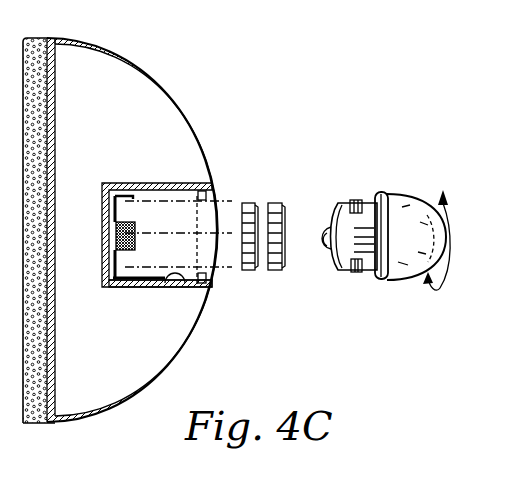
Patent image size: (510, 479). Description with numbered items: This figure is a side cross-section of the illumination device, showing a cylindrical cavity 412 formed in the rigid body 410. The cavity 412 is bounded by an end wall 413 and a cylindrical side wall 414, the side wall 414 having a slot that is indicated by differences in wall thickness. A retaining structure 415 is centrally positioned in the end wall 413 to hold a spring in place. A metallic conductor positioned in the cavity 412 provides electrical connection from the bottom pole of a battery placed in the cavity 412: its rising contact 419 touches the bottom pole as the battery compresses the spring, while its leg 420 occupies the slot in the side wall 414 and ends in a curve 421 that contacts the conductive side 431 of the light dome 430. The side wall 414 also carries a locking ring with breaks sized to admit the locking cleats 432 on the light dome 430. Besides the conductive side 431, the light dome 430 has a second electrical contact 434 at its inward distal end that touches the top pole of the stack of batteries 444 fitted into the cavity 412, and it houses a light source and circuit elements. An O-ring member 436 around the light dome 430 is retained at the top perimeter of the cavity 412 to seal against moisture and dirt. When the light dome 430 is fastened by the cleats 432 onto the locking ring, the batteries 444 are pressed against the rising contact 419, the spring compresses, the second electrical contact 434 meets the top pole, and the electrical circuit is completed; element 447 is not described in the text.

The rigid body 410 is at (148, 78).
The cylindrical cavity 412 is at (136, 230).
The end wall 413 is at (101, 288).
The cylindrical side wall 414 is at (164, 288).
The retaining structure 415 is at (132, 281).
The rising contact 419 is at (135, 199).
The leg 420 is at (156, 277).
The curve 421 is at (178, 272).
The light dome 430 is at (409, 198).
The conductive side 431 is at (338, 268).
The locking cleats 432 is at (357, 201).
The second electrical contact 434 is at (318, 230).
The O-ring member 436 is at (384, 199).
The batteries 444 is at (272, 272).
The light emitting diode 447 is at (135, 227).